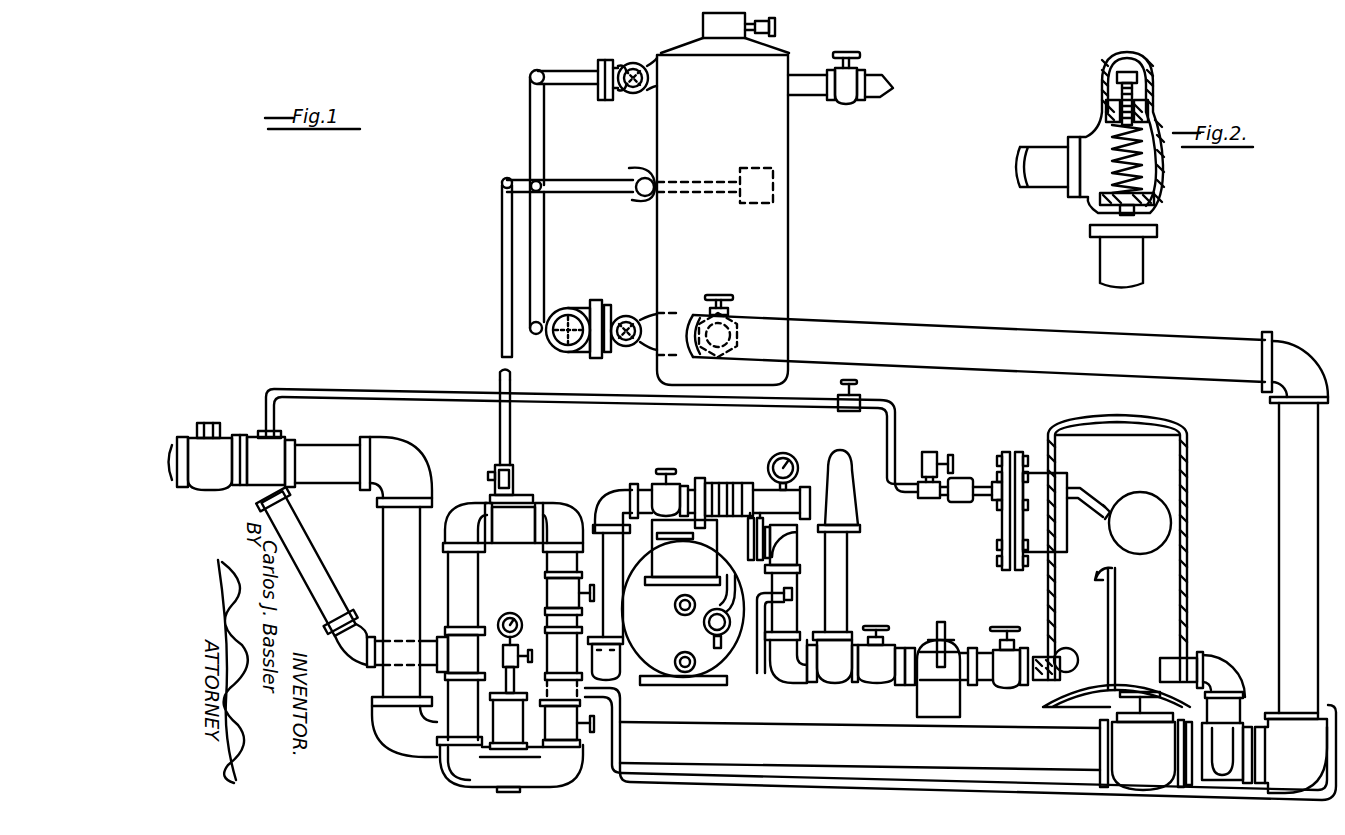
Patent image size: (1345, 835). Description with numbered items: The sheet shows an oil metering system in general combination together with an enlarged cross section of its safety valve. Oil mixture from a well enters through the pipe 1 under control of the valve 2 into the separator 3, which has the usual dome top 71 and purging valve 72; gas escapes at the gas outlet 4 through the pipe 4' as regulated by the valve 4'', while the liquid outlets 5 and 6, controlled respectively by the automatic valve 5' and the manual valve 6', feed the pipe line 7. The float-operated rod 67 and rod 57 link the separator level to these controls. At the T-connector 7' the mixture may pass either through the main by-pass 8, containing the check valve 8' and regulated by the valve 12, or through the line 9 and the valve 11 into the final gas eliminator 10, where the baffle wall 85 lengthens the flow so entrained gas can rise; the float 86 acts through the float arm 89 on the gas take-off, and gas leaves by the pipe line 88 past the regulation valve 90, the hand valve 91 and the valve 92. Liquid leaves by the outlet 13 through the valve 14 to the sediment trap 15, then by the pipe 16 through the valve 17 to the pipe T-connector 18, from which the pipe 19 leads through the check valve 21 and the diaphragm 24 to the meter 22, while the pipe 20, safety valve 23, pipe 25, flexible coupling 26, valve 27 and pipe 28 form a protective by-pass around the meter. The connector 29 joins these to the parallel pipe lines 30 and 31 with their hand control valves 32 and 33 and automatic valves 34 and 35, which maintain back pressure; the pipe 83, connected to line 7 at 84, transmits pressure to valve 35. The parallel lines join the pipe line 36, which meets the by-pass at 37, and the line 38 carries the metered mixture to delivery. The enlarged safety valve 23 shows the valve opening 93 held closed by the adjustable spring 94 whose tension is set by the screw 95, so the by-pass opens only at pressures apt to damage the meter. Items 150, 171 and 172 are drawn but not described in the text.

In FIG. 1, the pipe 1 is at (862, 98).
In FIG. 1, the valve 2 is at (858, 70).
In FIG. 1, the separator 3 is at (790, 150).
In FIG. 1, the gas outlet 4 is at (637, 60).
In FIG. 1, the pipe 4' is at (590, 65).
In FIG. 1, the valve 4'' is at (622, 99).
In FIG. 1, the liquid outlet 5 is at (642, 344).
In FIG. 1, the automatic valve 5' is at (590, 311).
In FIG. 1, the liquid outlet 6 is at (733, 325).
In FIG. 1, the manual valve 6' is at (732, 292).
In FIG. 1, the pipe line 7 is at (1008, 346).
In FIG. 1, the T-connector 7' is at (1160, 709).
In FIG. 1, the by-pass 8 is at (860, 732).
In FIG. 1, the check valve 8' is at (192, 488).
In FIG. 1, the line 9 is at (1190, 657).
In FIG. 1, the gas eliminator 10 is at (1187, 545).
In FIG. 1, the valve 11 is at (1228, 705).
In FIG. 1, the valve 12 is at (1146, 751).
In FIG. 1, the outlet 13 is at (1032, 655).
In FIG. 1, the valve 14 is at (998, 690).
In FIG. 1, the sediment trap 15 is at (936, 669).
In FIG. 1, the pipe 16 is at (895, 640).
In FIG. 1, the valve 17 is at (855, 683).
In FIG. 1, the pipe T-connector 18 is at (852, 632).
In FIG. 1, the pipe 19 is at (778, 658).
In FIG. 1, the pipe 20 is at (852, 585).
In FIG. 2, the pipe 20 is at (1108, 262).
In FIG. 1, the check valve 21 is at (790, 556).
In FIG. 1, the meter 22 is at (690, 686).
In FIG. 1, the safety valve 23 is at (850, 520).
In FIG. 2, the safety valve 23 is at (1165, 173).
In FIG. 1, the diaphragm 24 is at (755, 540).
In FIG. 1, the pipe 25 is at (700, 485).
In FIG. 1, the flexible coupling 26 is at (725, 485).
In FIG. 1, the valve 27 is at (660, 490).
In FIG. 1, the pipe 28 is at (595, 530).
In FIG. 1, the connector 29 is at (622, 682).
In FIG. 1, the parallel pipe line 30 is at (475, 576).
In FIG. 1, the parallel pipe line 31 is at (565, 762).
In FIG. 1, the hand control valve 32 is at (547, 598).
In FIG. 1, the hand control valve 33 is at (567, 723).
In FIG. 1, the automatic valve 34 is at (530, 507).
In FIG. 1, the automatic valve 35 is at (500, 762).
In FIG. 1, the pipe line 36 is at (320, 570).
In FIG. 1, the connection point 37 is at (258, 448).
In FIG. 1, the line 38 is at (185, 445).
In FIG. 1, the rod 57 is at (502, 287).
In FIG. 1, the rod 67 is at (530, 135).
In FIG. 1, the dome top 71 is at (786, 50).
In FIG. 1, the purging valve 72 is at (780, 30).
In FIG. 1, the pipe 83 is at (745, 782).
In FIG. 1, the connection point 84 is at (1328, 702).
In FIG. 1, the baffle wall 85 is at (1120, 590).
In FIG. 1, the float 86 is at (1150, 500).
In FIG. 1, the pipe line 88 is at (392, 392).
In FIG. 1, the float arm 89 is at (1098, 498).
In FIG. 1, the regulation valve 90 is at (968, 500).
In FIG. 1, the hand valve 91 is at (862, 394).
In FIG. 1, the valve 92 is at (936, 452).
In FIG. 2, the valve opening 93 is at (1100, 205).
In FIG. 2, the adjustable spring 94 is at (1110, 135).
In FIG. 2, the screw 95 is at (1110, 95).
In FIG. 1, the lubricator 150 is at (708, 632).
In FIG. 1, the pipe 171 is at (735, 677).
In FIG. 1, the bolt 172 is at (680, 616).